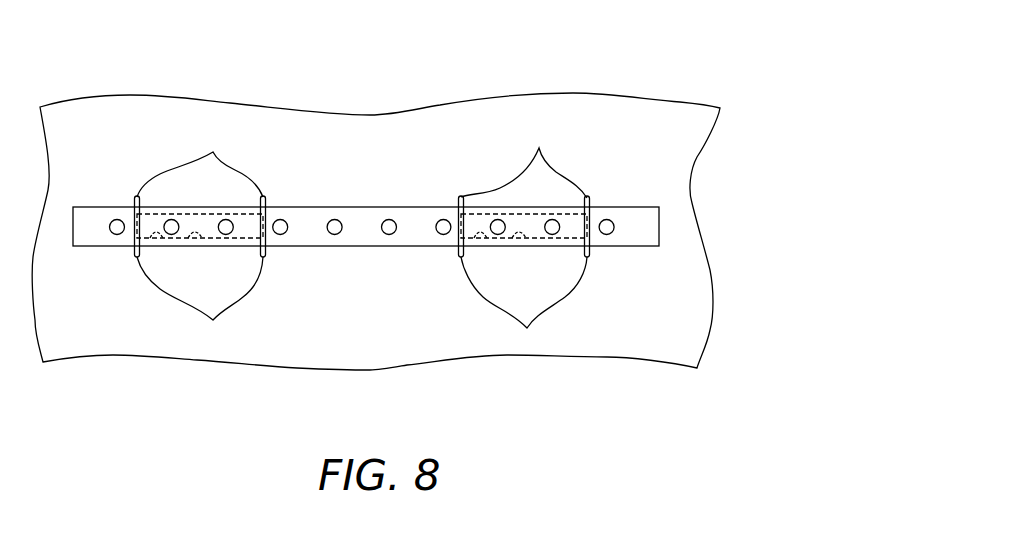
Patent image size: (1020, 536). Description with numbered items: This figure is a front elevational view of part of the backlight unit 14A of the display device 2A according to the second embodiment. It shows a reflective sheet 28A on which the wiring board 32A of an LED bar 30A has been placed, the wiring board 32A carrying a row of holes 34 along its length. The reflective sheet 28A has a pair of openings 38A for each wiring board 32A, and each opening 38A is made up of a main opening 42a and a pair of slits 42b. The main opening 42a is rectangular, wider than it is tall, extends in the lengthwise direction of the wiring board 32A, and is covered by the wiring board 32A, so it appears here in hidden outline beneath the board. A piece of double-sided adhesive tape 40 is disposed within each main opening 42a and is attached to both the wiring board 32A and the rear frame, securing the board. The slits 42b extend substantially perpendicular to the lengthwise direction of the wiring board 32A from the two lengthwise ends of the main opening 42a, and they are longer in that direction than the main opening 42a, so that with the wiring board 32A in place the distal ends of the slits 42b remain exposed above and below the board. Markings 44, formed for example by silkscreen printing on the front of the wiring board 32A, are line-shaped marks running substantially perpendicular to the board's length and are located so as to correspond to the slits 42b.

The display device 2A is at (613, 60).
The backlight unit 14A is at (635, 128).
The reflective sheet 28A is at (687, 147).
The LED bar 30A is at (452, 125).
The wiring board 32A is at (413, 220).
The holes 34 is at (340, 226).
The opening 38A is at (197, 228).
The double-sided adhesive tape 40 is at (207, 213).
The main opening 42a is at (160, 240).
The slit 42b is at (366, 238).
The marking 44 is at (137, 232).